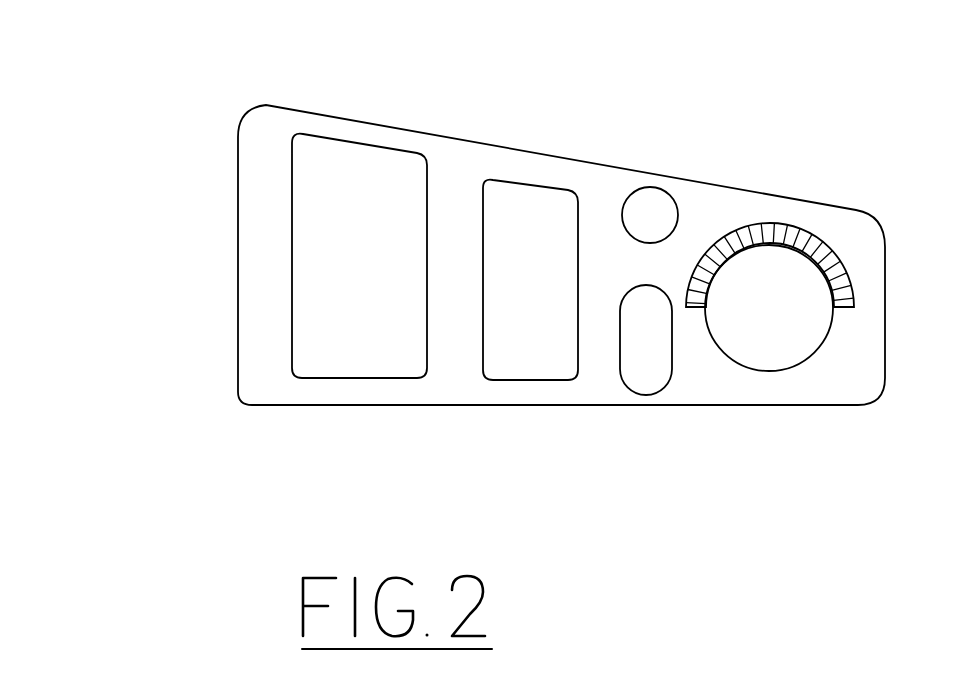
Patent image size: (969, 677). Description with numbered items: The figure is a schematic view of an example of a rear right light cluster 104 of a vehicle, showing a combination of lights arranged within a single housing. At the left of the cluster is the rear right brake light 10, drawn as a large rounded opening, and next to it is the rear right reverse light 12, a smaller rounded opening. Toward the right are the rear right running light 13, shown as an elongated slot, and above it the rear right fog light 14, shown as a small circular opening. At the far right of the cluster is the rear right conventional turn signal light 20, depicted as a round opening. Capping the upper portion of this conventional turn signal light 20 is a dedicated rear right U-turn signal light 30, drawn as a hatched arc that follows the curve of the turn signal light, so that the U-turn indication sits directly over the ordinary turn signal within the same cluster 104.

The rear right light cluster 104 is at (362, 117).
The rear right brake light 10 is at (318, 298).
The rear right reverse light 12 is at (415, 465).
The rear right running light 13 is at (592, 468).
The rear right fog light 14 is at (657, 200).
The rear right conventional turn signal light 20 is at (778, 443).
The rear right U-turn signal light 30 is at (807, 180).